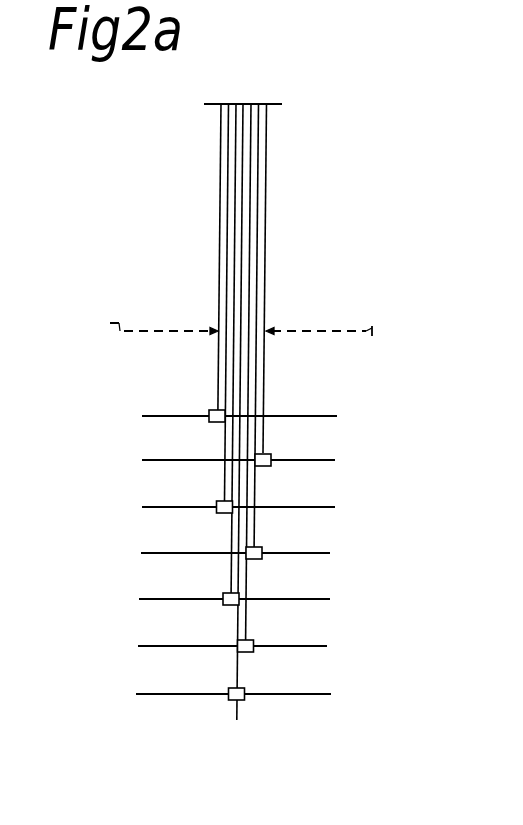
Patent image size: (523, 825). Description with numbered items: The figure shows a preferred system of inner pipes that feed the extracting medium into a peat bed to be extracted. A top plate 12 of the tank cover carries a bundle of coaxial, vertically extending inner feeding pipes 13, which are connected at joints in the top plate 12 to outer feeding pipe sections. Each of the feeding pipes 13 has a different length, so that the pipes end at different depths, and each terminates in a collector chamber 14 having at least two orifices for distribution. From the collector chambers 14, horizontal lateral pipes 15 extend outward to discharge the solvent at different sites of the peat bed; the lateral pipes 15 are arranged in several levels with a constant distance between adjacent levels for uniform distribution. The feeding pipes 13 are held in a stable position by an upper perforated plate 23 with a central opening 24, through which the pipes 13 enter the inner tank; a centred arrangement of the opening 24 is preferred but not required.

The top plate 12 is at (272, 103).
The inner feeding pipe 13 is at (237, 269).
The collector chamber 14 is at (245, 689).
The lateral pipe 15 is at (315, 507).
The upper perforated plate 23 is at (317, 331).
The central opening 24 is at (217, 329).